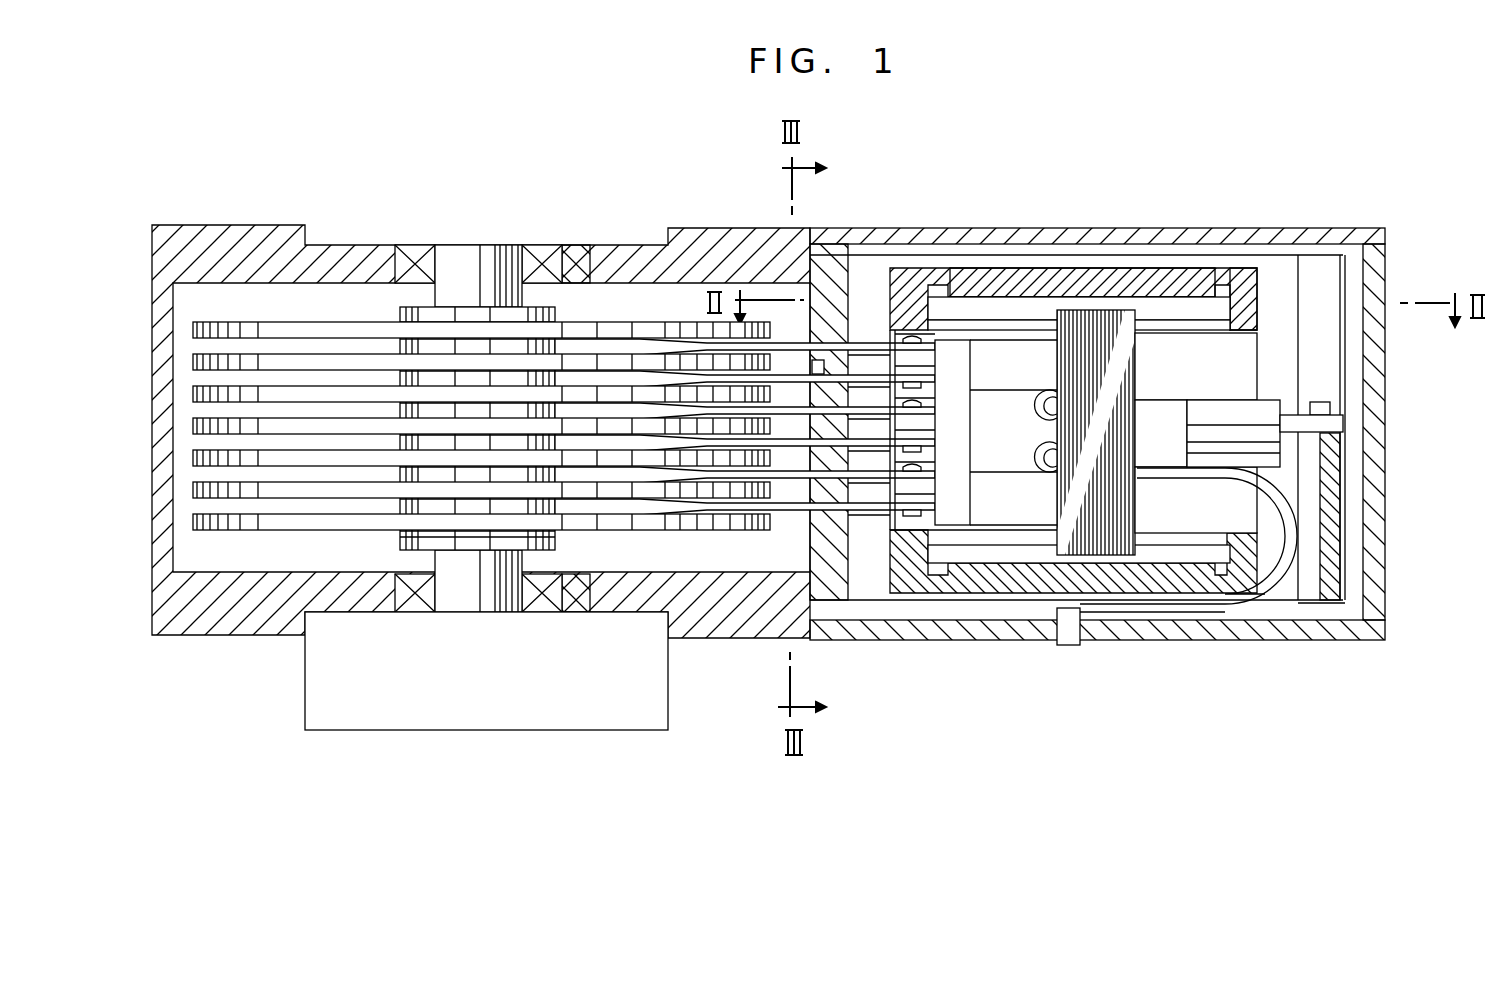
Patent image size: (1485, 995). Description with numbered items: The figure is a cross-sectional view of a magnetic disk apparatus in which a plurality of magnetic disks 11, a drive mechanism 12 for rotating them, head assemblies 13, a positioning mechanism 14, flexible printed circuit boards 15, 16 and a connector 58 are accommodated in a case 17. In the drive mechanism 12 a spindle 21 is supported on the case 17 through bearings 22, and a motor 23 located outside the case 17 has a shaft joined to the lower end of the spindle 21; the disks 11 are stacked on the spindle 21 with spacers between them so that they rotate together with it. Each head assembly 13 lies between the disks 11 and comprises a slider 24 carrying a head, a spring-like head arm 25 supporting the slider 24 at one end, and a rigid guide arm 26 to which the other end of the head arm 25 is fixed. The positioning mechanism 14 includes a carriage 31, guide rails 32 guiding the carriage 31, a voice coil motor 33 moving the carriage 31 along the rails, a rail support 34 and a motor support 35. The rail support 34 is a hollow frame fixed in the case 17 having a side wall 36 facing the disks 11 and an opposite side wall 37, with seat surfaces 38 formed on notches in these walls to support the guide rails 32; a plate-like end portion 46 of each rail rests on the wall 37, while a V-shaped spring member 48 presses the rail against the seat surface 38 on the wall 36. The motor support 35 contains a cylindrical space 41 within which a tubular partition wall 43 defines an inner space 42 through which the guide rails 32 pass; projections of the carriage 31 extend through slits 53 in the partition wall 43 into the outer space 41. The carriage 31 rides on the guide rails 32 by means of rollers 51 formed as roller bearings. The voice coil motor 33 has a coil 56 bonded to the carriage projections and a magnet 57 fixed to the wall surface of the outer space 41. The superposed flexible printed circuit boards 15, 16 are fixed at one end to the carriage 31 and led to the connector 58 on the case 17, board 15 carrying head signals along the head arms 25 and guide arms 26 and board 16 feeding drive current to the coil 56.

The magnetic disks 11 is at (342, 325).
The drive mechanism 12 is at (548, 300).
The head assemblies 13 is at (838, 425).
The positioning mechanism 14 is at (968, 612).
The flexible printed circuit boards 15 is at (1273, 606).
The flexible printed circuit board 16 is at (1288, 592).
The case 17 is at (1375, 575).
The spindle 21 is at (485, 247).
The bearings 22 is at (415, 247).
The motor 23 is at (525, 728).
The slider 24 is at (650, 527).
The head arm 25 is at (697, 522).
The guide arm 26 is at (860, 517).
The carriage 31 is at (1005, 408).
The guide rails 32 is at (1268, 410).
The voice coil motor 33 is at (1130, 266).
The rail support 34 is at (1343, 545).
The motor support 35 is at (1250, 272).
The side wall 36 is at (825, 553).
The side wall 37 is at (1330, 503).
The seat surfaces 38 is at (900, 338).
The cylindrical space 41 is at (1035, 305).
The inner space 42 is at (1257, 357).
The partition wall 43 is at (1178, 552).
The end portion 46 is at (1332, 430).
The spring member 48 is at (822, 360).
The rollers 51 is at (1042, 446).
The slits 53 is at (985, 325).
The coil 56 is at (1130, 358).
The magnet 57 is at (1185, 290).
The connector 58 is at (1068, 646).